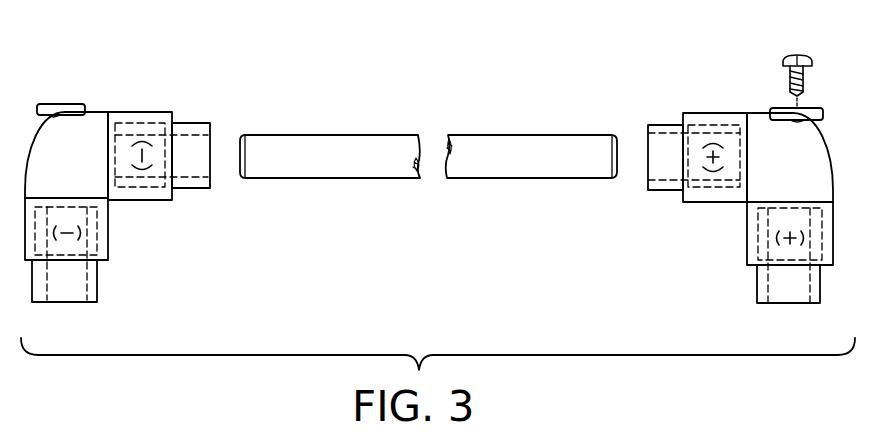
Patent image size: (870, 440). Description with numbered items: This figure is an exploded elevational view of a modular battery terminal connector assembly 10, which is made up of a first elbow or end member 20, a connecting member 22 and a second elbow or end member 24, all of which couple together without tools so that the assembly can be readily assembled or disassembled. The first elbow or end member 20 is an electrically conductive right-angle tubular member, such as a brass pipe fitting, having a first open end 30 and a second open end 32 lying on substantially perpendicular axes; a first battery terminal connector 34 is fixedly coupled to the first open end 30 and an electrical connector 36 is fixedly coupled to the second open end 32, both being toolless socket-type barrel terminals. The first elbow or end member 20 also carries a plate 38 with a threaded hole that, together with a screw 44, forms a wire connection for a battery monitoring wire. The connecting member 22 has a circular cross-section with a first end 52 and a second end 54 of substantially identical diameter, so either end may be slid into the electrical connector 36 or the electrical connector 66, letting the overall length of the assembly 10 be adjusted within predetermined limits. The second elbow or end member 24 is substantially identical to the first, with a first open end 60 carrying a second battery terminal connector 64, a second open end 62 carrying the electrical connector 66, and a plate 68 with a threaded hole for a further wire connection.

The modular battery terminal connector assembly 10 is at (498, 102).
The first elbow or end member 20 is at (750, 110).
The connecting member 22 is at (383, 133).
The second elbow or end member 24 is at (102, 108).
The first open end 30 is at (767, 303).
The second open end 32 is at (648, 186).
The first battery terminal connector 34 is at (757, 282).
The electrical connector 36 is at (663, 125).
The plate 38 is at (813, 107).
The screw 44 is at (792, 56).
The first end 52 is at (578, 133).
The second end 54 is at (280, 133).
The first open end 60 is at (73, 302).
The second open end 62 is at (210, 188).
The second battery terminal connector 64 is at (98, 285).
The electrical connector 66 is at (195, 123).
The plate 68 is at (53, 103).